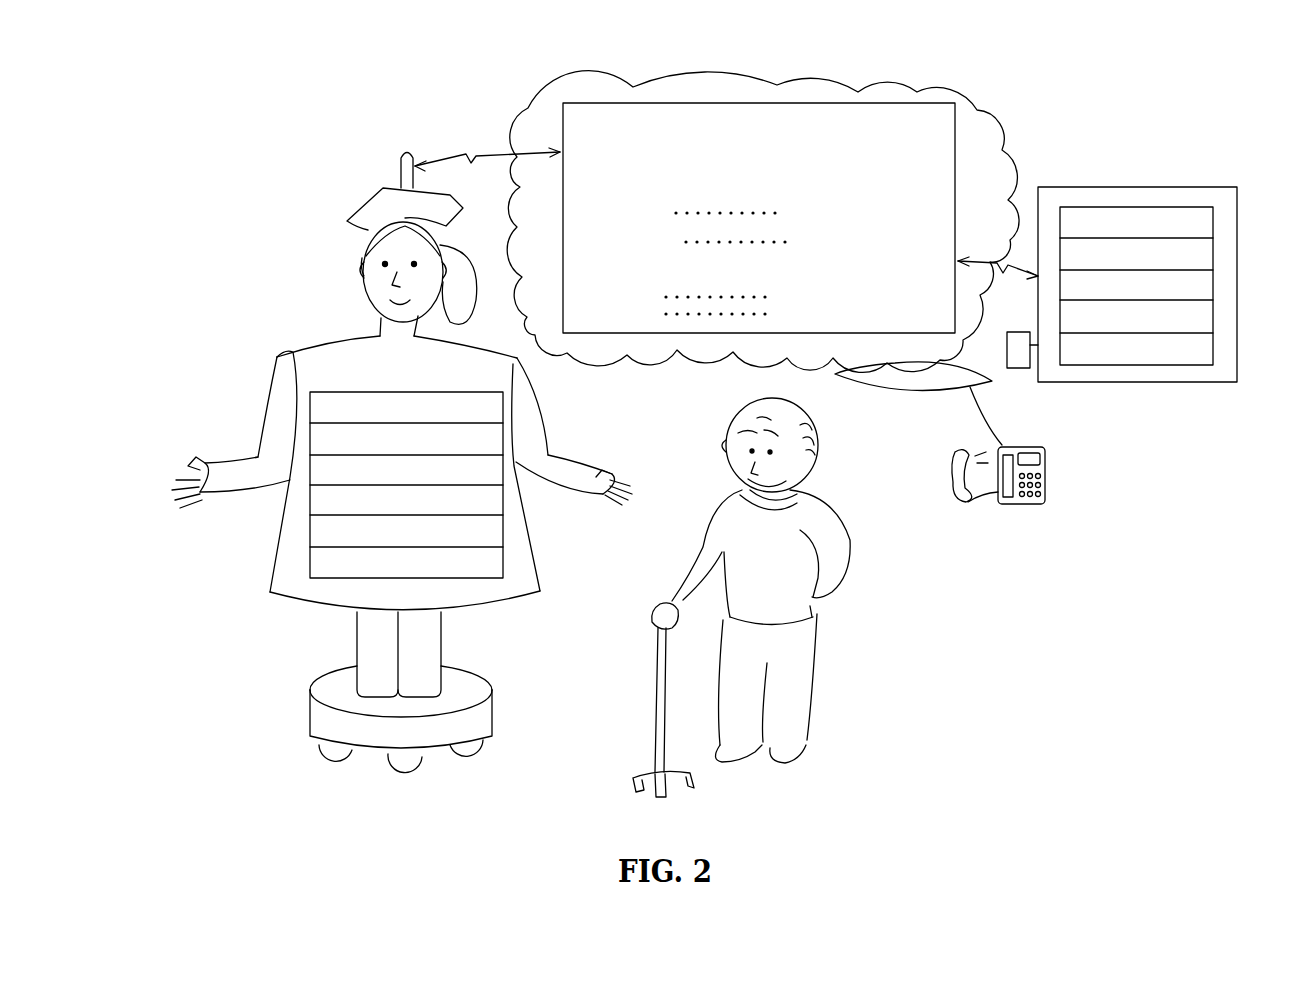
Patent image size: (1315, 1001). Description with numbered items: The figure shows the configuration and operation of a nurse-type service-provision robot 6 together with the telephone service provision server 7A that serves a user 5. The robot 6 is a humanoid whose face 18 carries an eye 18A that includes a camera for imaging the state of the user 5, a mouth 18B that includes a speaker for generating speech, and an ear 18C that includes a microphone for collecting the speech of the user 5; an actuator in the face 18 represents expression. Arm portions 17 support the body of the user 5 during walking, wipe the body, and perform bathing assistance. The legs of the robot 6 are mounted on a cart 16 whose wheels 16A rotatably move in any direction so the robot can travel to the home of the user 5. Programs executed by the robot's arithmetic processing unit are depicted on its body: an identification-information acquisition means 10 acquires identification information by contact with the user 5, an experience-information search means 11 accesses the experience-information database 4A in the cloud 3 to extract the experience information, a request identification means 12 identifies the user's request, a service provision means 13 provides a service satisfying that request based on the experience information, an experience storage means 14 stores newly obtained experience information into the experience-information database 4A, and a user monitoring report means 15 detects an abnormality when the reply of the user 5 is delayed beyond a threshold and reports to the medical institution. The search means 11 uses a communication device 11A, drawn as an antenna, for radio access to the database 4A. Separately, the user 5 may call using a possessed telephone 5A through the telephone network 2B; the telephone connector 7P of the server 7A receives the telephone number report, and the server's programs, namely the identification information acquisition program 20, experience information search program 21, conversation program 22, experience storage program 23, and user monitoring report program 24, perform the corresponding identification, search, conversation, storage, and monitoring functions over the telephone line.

The service-provision robot 6 is at (353, 207).
The communication device 11A is at (399, 170).
The face 18 is at (375, 282).
The eye 18A is at (378, 253).
The ear 18C is at (362, 262).
The mouth 18B is at (380, 303).
The identification-information acquisition means 10 is at (310, 405).
The experience-information search means 11 is at (310, 437).
The request identification means 12 is at (310, 468).
The service provision means 13 is at (312, 503).
The experience storage means 14 is at (312, 530).
The user monitoring report means 15 is at (312, 562).
The arm portions 17 is at (232, 477).
The cart 16 is at (310, 703).
The wheels 16A is at (455, 755).
The cloud database 3 is at (988, 130).
The experience-information database 4A is at (677, 103).
The telephone network 2B is at (880, 393).
The telephone service provision server 7A is at (1133, 187).
The identification information acquisition program 20 is at (1210, 224).
The experience information search program 21 is at (1210, 255).
The conversation program 22 is at (1210, 287).
The experience storage program 23 is at (1210, 319).
The user monitoring report program 24 is at (1210, 351).
The telephone connector 7P is at (1020, 370).
The user 5 is at (822, 503).
The telephone 5A is at (1048, 483).